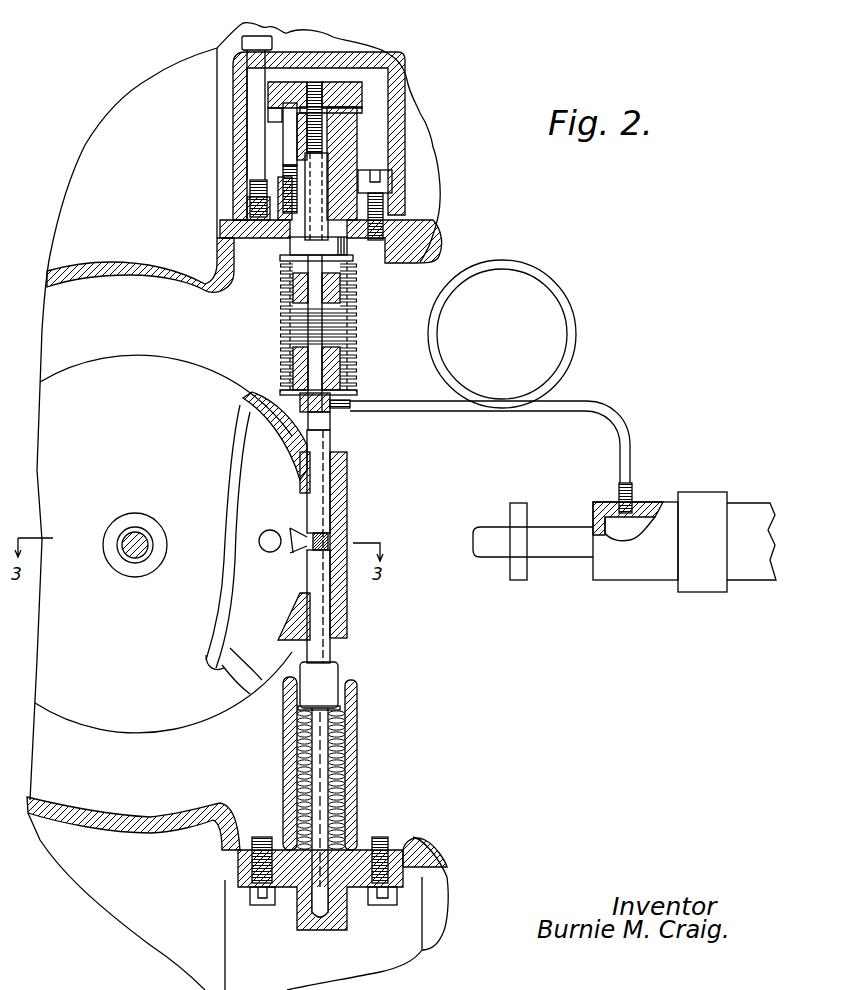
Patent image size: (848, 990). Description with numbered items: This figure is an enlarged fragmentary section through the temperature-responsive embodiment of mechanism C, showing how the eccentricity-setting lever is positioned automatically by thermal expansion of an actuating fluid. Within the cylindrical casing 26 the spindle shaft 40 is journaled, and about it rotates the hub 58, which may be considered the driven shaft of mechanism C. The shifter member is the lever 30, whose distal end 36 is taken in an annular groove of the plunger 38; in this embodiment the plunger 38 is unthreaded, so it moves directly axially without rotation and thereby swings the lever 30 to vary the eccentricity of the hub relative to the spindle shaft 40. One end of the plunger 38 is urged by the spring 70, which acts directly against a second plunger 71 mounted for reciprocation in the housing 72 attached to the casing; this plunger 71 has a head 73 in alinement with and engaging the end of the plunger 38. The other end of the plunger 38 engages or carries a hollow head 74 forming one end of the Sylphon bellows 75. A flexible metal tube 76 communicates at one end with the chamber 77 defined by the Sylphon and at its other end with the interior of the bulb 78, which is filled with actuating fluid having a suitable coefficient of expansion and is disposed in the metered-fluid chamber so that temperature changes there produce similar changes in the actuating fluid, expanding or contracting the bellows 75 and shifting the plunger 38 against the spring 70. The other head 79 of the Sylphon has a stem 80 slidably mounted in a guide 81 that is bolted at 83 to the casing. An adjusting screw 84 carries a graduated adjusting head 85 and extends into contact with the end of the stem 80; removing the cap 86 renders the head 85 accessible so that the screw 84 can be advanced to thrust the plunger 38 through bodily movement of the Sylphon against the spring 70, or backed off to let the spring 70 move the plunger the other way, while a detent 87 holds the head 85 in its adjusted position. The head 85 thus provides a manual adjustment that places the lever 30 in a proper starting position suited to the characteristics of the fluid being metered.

The cylindrical casing 26 is at (257, 700).
The mechanism C is at (170, 743).
The hub 58 is at (157, 548).
The spindle shaft 40 is at (140, 557).
The lever 30 is at (297, 525).
The distal end 36 is at (340, 540).
The plunger 38 is at (320, 613).
The hollow head 74 is at (333, 417).
The Sylphon bellows 75 is at (357, 335).
The chamber 77 is at (340, 273).
The other head 79 is at (350, 246).
The flexible metal tube 76 is at (420, 404).
The bulb 78 is at (637, 527).
The head 73 is at (333, 700).
The spring 70 is at (347, 753).
The plunger 71 is at (320, 763).
The housing 72 is at (347, 788).
The cap 86 is at (233, 118).
The detent 87 is at (287, 143).
The graduated adjusting head 85 is at (360, 92).
The adjusting screw 84 is at (315, 133).
The guide 81 is at (347, 153).
The stem 80 is at (320, 180).
The bolt 83 is at (387, 230).